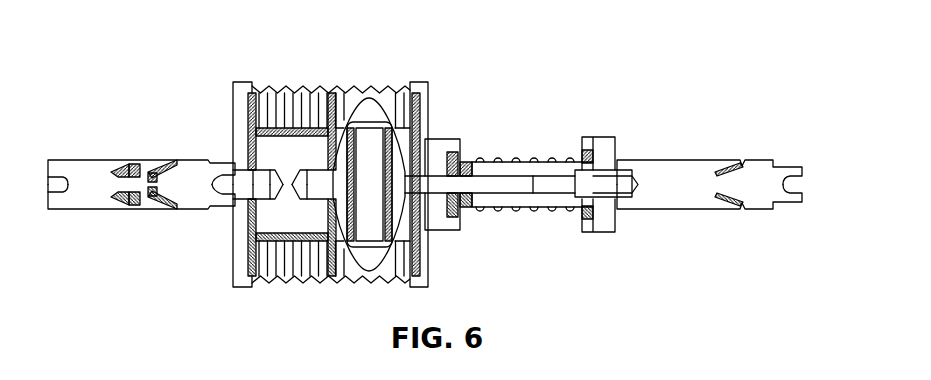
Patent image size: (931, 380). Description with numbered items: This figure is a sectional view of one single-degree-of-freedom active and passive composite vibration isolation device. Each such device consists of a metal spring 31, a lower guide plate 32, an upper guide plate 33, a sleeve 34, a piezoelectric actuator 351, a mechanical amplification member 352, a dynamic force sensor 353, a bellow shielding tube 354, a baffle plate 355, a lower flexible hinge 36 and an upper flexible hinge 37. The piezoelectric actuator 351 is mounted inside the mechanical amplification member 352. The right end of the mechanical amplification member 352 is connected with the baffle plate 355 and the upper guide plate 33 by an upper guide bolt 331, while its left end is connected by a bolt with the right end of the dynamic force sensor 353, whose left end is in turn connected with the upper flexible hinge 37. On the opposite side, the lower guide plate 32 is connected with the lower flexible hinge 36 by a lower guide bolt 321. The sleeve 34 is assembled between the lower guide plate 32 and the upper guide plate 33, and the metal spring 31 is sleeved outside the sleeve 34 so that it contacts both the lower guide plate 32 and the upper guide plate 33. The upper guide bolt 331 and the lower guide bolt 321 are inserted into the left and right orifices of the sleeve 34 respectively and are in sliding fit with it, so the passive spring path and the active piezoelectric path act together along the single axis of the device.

The metal spring 31 is at (561, 158).
The lower guide plate 32 is at (618, 173).
The lower guide bolt 321 is at (593, 187).
The upper guide plate 33 is at (437, 157).
The upper guide bolt 331 is at (507, 187).
The sleeve 34 is at (603, 157).
The piezoelectric actuator 351 is at (372, 155).
The mechanical amplification member 352 is at (370, 118).
The dynamic force sensor 353 is at (282, 150).
The bellow shielding tube 354 is at (243, 98).
The baffle plate 355 is at (427, 137).
The lower flexible hinge 36 is at (760, 180).
The upper flexible hinge 37 is at (110, 189).